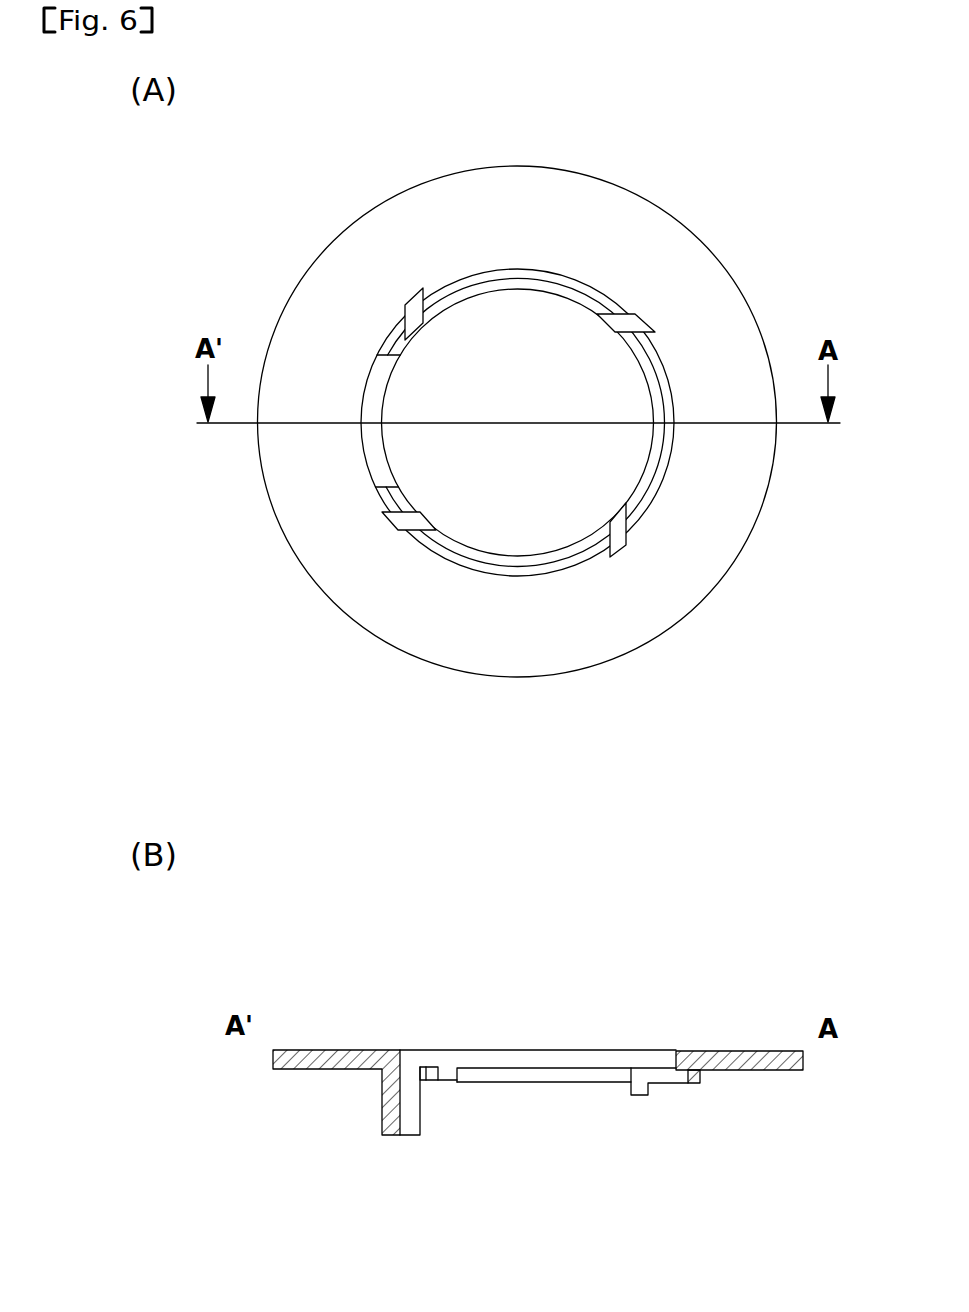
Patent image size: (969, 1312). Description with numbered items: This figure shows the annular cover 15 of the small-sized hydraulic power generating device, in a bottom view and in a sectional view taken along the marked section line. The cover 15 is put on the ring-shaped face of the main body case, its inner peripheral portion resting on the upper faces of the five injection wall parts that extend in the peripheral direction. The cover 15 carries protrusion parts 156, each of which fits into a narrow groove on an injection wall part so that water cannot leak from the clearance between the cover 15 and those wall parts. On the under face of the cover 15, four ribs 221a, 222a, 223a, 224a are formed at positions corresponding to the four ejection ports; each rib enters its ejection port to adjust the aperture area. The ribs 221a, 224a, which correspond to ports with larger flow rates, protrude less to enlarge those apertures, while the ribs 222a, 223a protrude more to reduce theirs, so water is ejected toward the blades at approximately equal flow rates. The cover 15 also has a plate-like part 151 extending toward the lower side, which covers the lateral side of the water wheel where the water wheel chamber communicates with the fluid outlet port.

The cover 15 is at (328, 182).
The plate-like part 151 is at (418, 1137).
The protrusion part 156 is at (383, 338).
The rib 221a is at (625, 545).
The rib 222a is at (395, 531).
The rib 223a is at (650, 318).
The rib 224a is at (405, 301).